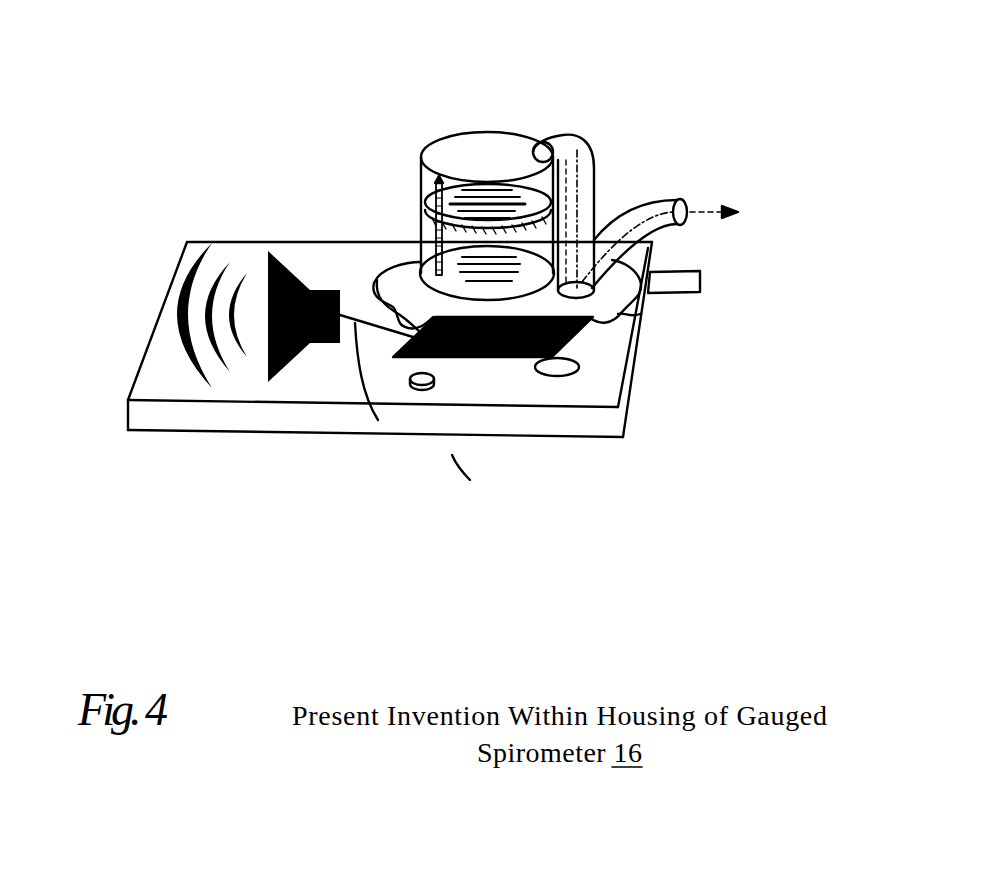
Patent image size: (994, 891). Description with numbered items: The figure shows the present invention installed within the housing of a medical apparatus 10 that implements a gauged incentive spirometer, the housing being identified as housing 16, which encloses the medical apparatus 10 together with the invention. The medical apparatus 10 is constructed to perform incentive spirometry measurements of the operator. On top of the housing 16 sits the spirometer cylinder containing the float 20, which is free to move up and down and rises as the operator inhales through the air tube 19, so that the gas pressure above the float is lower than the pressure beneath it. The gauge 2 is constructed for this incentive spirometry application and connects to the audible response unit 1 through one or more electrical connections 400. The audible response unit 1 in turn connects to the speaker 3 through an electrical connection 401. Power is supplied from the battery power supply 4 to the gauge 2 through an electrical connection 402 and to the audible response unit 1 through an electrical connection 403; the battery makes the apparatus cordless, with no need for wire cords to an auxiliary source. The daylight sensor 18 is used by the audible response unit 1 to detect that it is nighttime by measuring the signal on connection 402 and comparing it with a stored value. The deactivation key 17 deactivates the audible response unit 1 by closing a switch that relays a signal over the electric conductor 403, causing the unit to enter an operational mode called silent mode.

The housing of gauged spirometer 16 is at (170, 290).
The medical apparatus 10 is at (727, 104).
The float 20 is at (462, 182).
The gauge 2 is at (437, 236).
The air tube 19 is at (782, 156).
The deactivation key 17 is at (700, 273).
The speaker 3 is at (320, 347).
The audible response unit 1 is at (515, 360).
The daylight sensor 18 is at (422, 388).
The battery power supply 4 is at (580, 365).
The electrical connection 400 is at (377, 280).
The electrical connection 401 is at (378, 420).
The electrical connection 402 is at (470, 480).
The electric conductor 403 is at (640, 314).